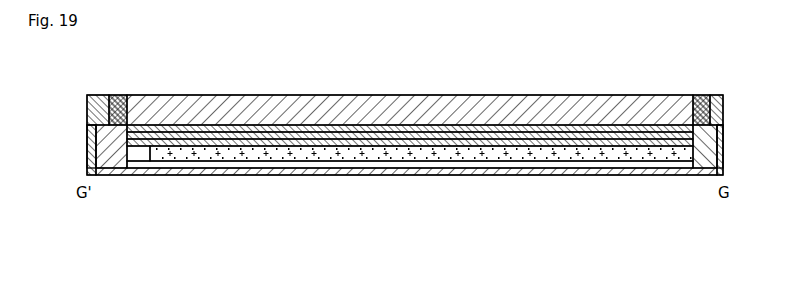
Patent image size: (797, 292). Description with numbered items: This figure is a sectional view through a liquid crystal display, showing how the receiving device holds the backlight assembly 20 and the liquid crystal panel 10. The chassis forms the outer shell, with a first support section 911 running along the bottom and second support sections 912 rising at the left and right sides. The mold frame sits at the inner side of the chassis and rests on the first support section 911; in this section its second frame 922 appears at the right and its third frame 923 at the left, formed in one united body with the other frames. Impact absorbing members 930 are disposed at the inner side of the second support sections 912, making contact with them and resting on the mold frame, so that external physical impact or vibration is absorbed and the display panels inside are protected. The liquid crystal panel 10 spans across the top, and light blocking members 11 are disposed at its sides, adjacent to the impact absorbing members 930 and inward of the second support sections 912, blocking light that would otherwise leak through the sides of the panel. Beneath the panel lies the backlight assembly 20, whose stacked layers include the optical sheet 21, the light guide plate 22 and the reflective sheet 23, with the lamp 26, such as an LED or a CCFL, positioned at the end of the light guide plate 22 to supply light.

The liquid crystal panel 10 is at (395, 102).
The light blocking members 11 is at (118, 95).
The backlight assembly 20 is at (345, 227).
The optical sheet 21 is at (120, 140).
The light guide plate 22 is at (257, 160).
The reflective sheet 23 is at (355, 165).
The lamp 26 is at (140, 155).
The first support section 911 is at (451, 172).
The second support sections 912 is at (88, 118).
The second frame 922 is at (707, 155).
The third frame 923 is at (88, 158).
The impact absorbing members 930 is at (723, 110).